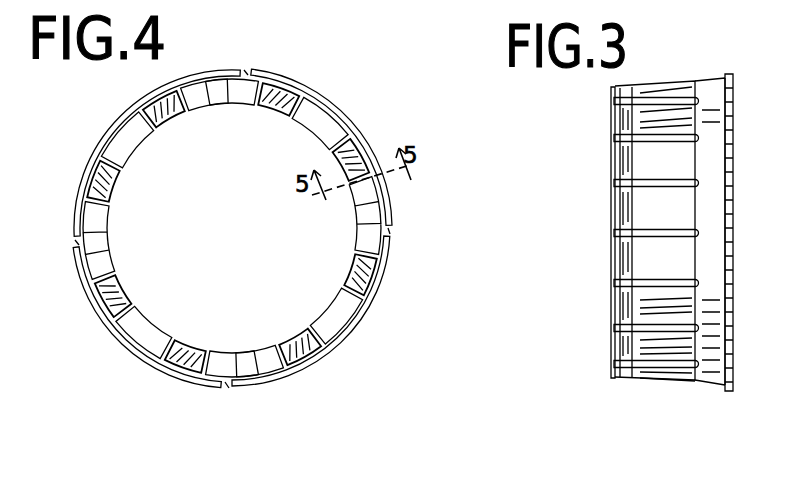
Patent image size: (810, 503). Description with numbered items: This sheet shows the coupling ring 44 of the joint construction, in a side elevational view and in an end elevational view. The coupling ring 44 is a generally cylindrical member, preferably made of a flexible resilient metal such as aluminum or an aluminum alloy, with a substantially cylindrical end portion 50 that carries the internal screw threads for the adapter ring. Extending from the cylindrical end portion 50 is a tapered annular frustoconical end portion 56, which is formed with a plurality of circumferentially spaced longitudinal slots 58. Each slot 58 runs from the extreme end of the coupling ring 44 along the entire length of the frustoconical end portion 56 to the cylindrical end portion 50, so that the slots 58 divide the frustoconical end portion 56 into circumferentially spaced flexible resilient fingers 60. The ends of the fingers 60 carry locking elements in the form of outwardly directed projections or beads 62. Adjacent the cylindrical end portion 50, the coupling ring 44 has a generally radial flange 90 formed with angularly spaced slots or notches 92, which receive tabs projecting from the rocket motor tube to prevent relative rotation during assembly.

In FIG. 4, the coupling ring 44 is at (105, 115).
In FIG. 3, the coupling ring 44 is at (711, 80).
In FIG. 4, the cylindrical end portion 50 is at (86, 162).
In FIG. 3, the cylindrical end portion 50 is at (700, 388).
In FIG. 3, the frustoconical end portion 56 is at (658, 380).
In FIG. 4, the longitudinal slots 58 is at (250, 352).
In FIG. 3, the longitudinal slots 58 is at (614, 188).
In FIG. 4, the flexible resilient fingers 60 is at (107, 250).
In FIG. 3, the flexible resilient fingers 60 is at (620, 290).
In FIG. 3, the beads 62 is at (611, 90).
In FIG. 4, the radial flange 90 is at (393, 262).
In FIG. 3, the radial flange 90 is at (735, 300).
In FIG. 4, the slots 92 is at (240, 70).